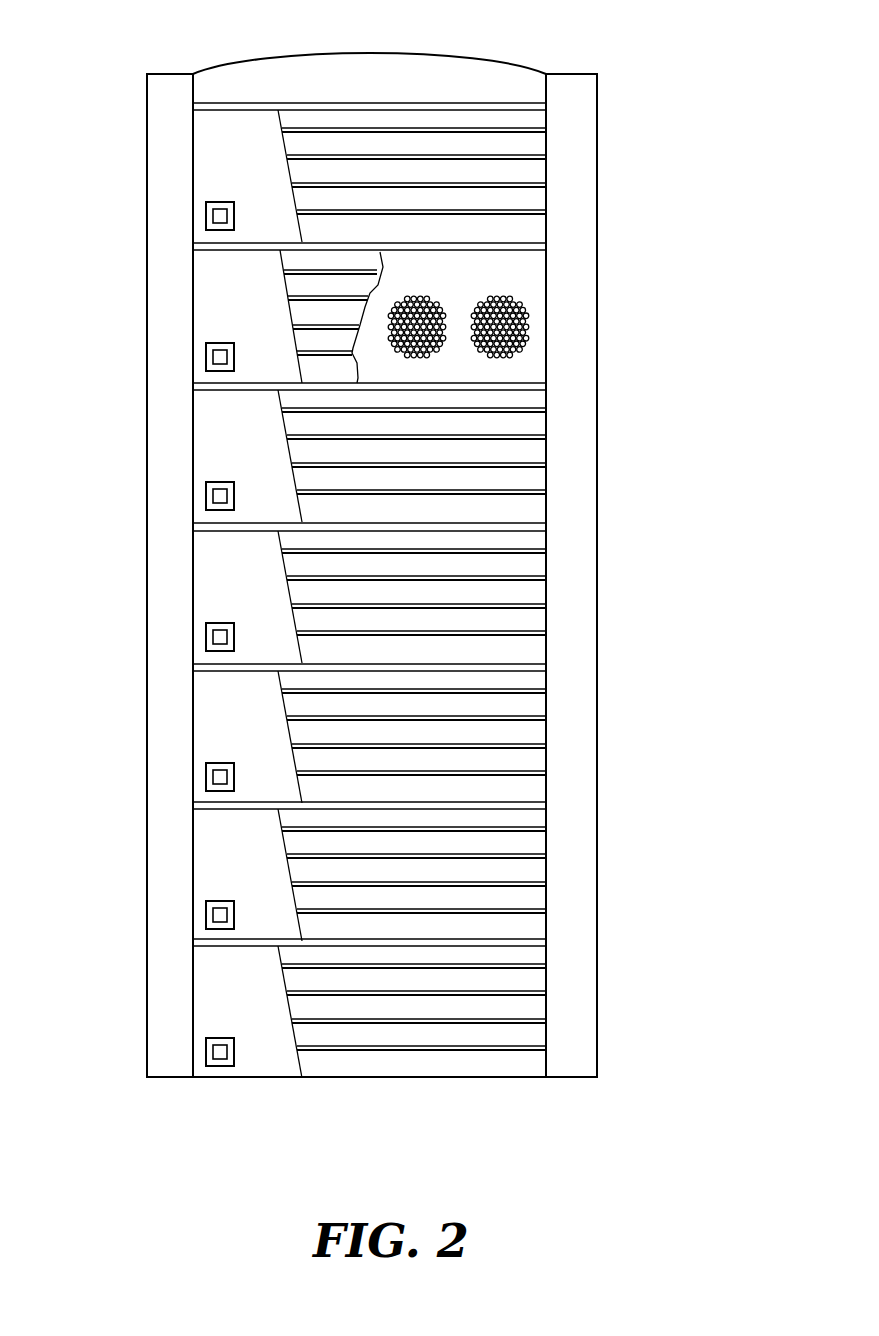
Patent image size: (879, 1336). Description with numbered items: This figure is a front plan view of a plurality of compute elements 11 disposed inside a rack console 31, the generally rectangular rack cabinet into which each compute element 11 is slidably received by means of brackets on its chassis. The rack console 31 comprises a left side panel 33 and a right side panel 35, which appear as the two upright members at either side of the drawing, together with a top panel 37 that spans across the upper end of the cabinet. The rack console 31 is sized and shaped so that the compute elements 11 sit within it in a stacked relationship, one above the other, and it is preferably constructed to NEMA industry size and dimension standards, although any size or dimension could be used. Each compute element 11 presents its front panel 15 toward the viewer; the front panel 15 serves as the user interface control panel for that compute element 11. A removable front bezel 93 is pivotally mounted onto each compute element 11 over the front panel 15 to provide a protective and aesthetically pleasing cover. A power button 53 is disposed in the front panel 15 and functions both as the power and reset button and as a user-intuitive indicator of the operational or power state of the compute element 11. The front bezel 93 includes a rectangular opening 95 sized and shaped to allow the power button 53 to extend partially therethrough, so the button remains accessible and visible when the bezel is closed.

The compute element 11 is at (549, 728).
The front panel 15 is at (527, 285).
The rack console 31 is at (580, 1042).
The left side panel 33 is at (147, 575).
The right side panel 35 is at (597, 574).
The top panel 37 is at (450, 70).
The power button 53 is at (205, 361).
The front bezel 93 is at (503, 453).
The rectangular opening 95 is at (205, 914).